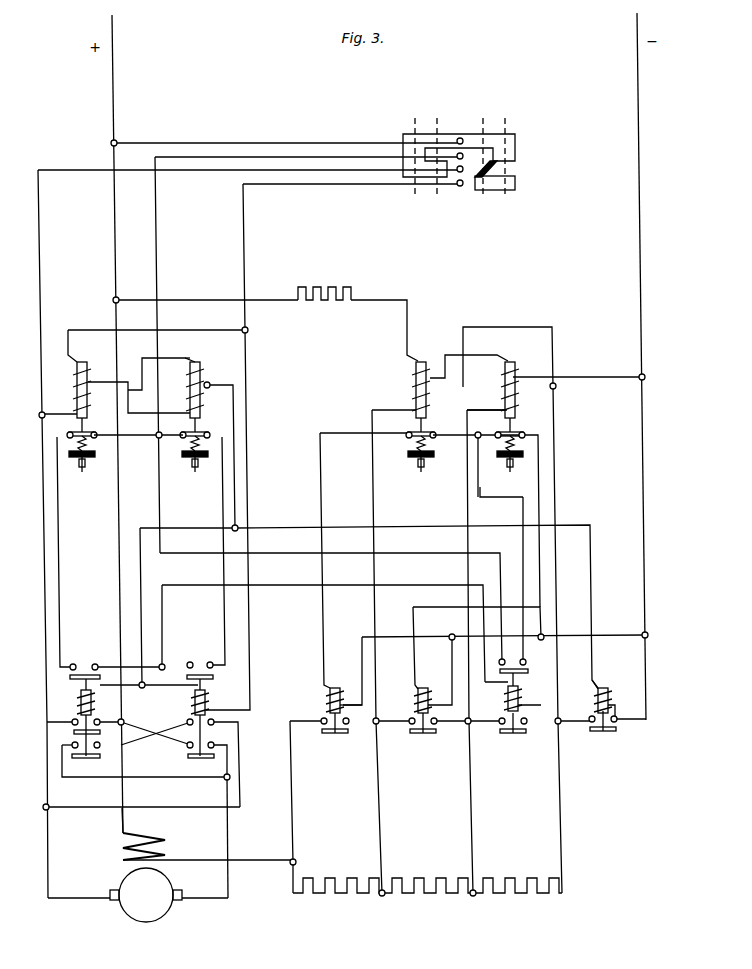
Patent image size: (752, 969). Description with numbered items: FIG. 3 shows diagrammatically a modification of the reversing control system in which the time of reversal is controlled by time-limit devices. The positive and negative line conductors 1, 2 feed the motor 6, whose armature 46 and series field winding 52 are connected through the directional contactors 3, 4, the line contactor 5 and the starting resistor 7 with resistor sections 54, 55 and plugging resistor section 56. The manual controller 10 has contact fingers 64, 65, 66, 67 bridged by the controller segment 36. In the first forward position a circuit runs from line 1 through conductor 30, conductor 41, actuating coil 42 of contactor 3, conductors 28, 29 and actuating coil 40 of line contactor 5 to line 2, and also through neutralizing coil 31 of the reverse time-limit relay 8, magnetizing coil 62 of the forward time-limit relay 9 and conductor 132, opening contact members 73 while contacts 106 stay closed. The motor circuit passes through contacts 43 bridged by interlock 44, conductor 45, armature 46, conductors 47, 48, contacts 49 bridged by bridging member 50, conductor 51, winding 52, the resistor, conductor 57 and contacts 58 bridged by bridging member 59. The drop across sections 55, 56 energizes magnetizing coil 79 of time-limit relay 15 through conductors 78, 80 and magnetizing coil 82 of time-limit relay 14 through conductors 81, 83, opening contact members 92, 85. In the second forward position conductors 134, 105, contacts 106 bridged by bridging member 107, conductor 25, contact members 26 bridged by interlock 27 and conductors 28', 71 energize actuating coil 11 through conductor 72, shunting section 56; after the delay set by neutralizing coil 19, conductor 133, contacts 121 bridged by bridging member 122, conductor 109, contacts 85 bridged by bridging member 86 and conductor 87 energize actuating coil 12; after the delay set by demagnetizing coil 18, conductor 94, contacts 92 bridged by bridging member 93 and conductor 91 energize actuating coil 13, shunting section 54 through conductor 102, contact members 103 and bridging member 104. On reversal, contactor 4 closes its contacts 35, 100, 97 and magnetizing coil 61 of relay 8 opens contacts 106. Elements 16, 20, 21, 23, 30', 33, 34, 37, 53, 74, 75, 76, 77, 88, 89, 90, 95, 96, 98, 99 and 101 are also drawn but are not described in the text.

The positive line conductor 1 is at (111, 139).
The negative line conductor 2 is at (641, 138).
The directional contactor 3 is at (27, 721).
The directional contactor 4 is at (259, 719).
The line contactor 5 is at (604, 676).
The motor 6 is at (94, 864).
The starting resistor 7 is at (419, 826).
The reverse time-limit relay 8 is at (76, 350).
The forward time-limit relay 9 is at (189, 350).
The manual controller 10 is at (479, 131).
The actuating coil of first accelerating relay 11 is at (506, 694).
The actuating coil of second accelerating relay 12 is at (418, 687).
The actuating coil of third accelerating relay 13 is at (330, 687).
The time-limit relay 14 is at (417, 350).
The time-limit relay 15 is at (505, 350).
The conductor 16 is at (172, 300).
The demagnetizing coil 18 is at (415, 373).
The neutralizing coil 19 is at (518, 373).
The resistor 20 is at (322, 288).
The conductor 21 is at (605, 376).
The relay coil 23 is at (205, 402).
The conductor 25 is at (60, 549).
The contact members 26 is at (72, 655).
The interlock 27 is at (96, 663).
The conductor 28 is at (149, 693).
The conductor 28' is at (184, 654).
The conductor 29 is at (296, 526).
The conductor 30 is at (285, 131).
The conductor 30' is at (156, 335).
The neutralizing coil 31 is at (74, 410).
The conductor 33 is at (214, 526).
The contact bar 34 is at (214, 677).
The contacts 35 is at (215, 552).
The controller segment 36 is at (520, 142).
The controller contact segment 37 is at (520, 182).
The actuating coil 40 is at (611, 693).
The conductor 41 is at (41, 236).
The actuating coil 42 is at (80, 692).
The contacts 43 is at (98, 720).
The interlock 44 is at (73, 732).
The conductor 45 is at (46, 830).
The armature 46 is at (138, 895).
The conductor 47 is at (230, 836).
The conductor 48 is at (166, 777).
The contacts 49 is at (98, 744).
The bridging member 50 is at (93, 758).
The conductor 51 is at (124, 826).
The series field winding 52 is at (162, 846).
The conductor 53 is at (255, 862).
The resistor section 54 is at (336, 896).
The resistor section 55 is at (423, 896).
The plugging resistor section 56 is at (511, 896).
The conductor 57 is at (574, 740).
The contacts 58 is at (592, 719).
The bridging member 59 is at (614, 734).
The magnetizing coil 61 is at (89, 375).
The magnetizing coil 62 is at (189, 373).
The contact finger 64 is at (470, 142).
The contact finger 65 is at (470, 156).
The contact finger 66 is at (470, 169).
The contact finger 67 is at (461, 186).
The conductor 71 is at (280, 586).
The conductor 72 is at (362, 632).
The contact members 73 is at (187, 446).
The relay contact bar 74 is at (207, 430).
The conductor 75 is at (480, 740).
The conductor 76 is at (503, 719).
The contact bar 77 is at (523, 737).
The conductor 78 is at (470, 514).
The magnetizing coil 79 is at (504, 405).
The conductor 80 is at (556, 480).
The conductor 81 is at (378, 514).
The magnetizing coil 82 is at (415, 405).
The conductor 83 is at (527, 327).
The contact members 85 is at (503, 453).
The bridging member 86 is at (523, 430).
The conductor 87 is at (445, 607).
The conductor 88 is at (384, 740).
The conductor 89 is at (410, 719).
The contact bar 90 is at (433, 737).
The conductor 91 is at (326, 514).
The contact members 92 is at (436, 432).
The bridging member 93 is at (406, 432).
The conductor 94 is at (436, 440).
The conductor 95 is at (247, 370).
The contactor coil 96 is at (206, 700).
The contacts 97 is at (188, 746).
The contact bar 98 is at (200, 758).
The conductor 99 is at (191, 809).
The contacts 100 is at (214, 720).
The contact 101 is at (188, 724).
The conductor 102 is at (295, 800).
The contact members 103 is at (322, 719).
The bridging member 104 is at (341, 737).
The conductor 105 is at (133, 440).
The contacts 106 is at (88, 456).
The bridging member 107 is at (92, 428).
The conductor 109 is at (487, 487).
The contacts 121 is at (512, 581).
The bridging member 122 is at (530, 670).
The conductor 132 is at (238, 468).
The conductor 133 is at (423, 553).
The conductor 134 is at (157, 236).